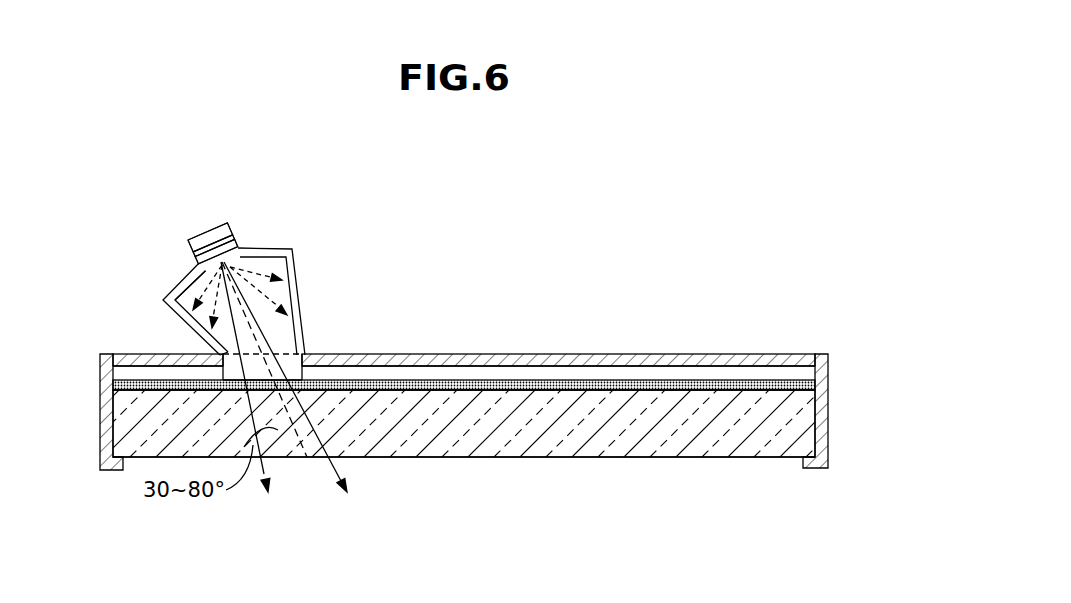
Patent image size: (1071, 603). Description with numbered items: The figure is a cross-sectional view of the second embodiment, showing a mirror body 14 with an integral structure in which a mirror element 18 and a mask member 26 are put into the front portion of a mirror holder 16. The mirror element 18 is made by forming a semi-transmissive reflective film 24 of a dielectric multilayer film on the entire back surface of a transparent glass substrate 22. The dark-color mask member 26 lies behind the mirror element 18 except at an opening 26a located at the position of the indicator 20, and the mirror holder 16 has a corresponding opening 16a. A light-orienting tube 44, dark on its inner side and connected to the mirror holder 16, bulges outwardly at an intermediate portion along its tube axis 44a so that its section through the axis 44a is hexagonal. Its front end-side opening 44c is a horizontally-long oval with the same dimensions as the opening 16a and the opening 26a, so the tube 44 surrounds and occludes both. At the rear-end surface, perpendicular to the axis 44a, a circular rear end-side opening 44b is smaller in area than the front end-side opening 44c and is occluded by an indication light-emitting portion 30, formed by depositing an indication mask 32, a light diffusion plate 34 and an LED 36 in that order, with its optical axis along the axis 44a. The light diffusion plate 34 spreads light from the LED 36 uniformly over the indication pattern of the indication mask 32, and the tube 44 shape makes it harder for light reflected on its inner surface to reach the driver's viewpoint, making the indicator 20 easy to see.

The mirror body 14 is at (636, 274).
The mirror holder 16 is at (470, 353).
The opening of the mirror holder 16a is at (297, 358).
The mirror element 18 is at (649, 462).
The indicator 20 is at (302, 490).
The transparent glass substrate 22 is at (500, 458).
The semi-transmissive reflective film 24 is at (568, 391).
The mask member 26 is at (531, 379).
The opening of the mask member 26a is at (237, 386).
The indication light-emitting portion 30 is at (179, 243).
The indication mask 32 is at (241, 252).
The light diffusion plate 34 is at (236, 238).
The LED 36 is at (226, 224).
The light-orienting tube 44 is at (300, 268).
The tube axis 44a is at (213, 250).
The rear end-side opening 44b is at (207, 273).
The front end-side opening 44c is at (212, 343).